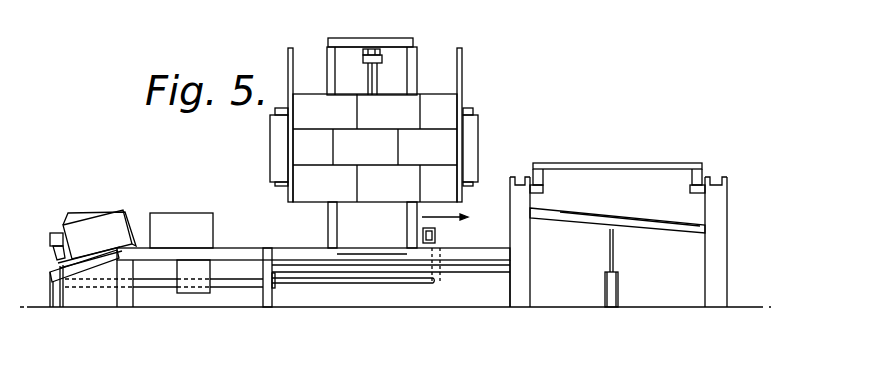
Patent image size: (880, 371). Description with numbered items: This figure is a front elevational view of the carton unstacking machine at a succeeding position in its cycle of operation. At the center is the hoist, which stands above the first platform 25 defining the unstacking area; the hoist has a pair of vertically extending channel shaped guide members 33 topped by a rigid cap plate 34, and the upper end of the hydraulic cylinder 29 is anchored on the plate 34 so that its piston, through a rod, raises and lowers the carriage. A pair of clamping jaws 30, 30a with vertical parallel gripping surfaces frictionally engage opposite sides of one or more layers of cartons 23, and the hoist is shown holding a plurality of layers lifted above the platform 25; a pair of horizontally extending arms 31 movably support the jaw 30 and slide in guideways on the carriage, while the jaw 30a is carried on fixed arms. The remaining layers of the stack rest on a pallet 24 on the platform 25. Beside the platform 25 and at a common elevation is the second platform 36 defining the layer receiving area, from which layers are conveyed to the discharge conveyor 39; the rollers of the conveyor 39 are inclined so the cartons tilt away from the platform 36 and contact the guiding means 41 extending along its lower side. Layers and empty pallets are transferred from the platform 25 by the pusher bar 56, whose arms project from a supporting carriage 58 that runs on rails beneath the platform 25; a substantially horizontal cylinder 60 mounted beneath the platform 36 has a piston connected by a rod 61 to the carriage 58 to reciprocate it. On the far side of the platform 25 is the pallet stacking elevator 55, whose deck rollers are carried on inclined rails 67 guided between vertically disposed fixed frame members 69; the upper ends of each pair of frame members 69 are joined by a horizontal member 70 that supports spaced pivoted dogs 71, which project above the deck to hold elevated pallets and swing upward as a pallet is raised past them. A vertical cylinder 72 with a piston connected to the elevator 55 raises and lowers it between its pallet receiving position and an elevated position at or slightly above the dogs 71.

The cartons 23 is at (353, 157).
The pallet 24 is at (642, 163).
The first platform 25 is at (370, 247).
The hydraulic cylinder 29 is at (368, 82).
The clamping jaw 30 is at (462, 68).
The clamping jaw 30a is at (288, 77).
The horizontally extending arms 31 is at (478, 108).
The channel shaped guide members 33 is at (417, 76).
The cap plate 34 is at (410, 40).
The second platform 36 is at (235, 244).
The discharge conveyor 39 is at (98, 255).
The guiding means 41 is at (55, 249).
The pallet stacking elevator 55 is at (629, 208).
The pusher bar 56 is at (436, 236).
The supporting carriage 58 is at (445, 272).
The cylinder 60 is at (248, 285).
The rod 61 is at (350, 285).
The inclined rails 67 is at (586, 223).
The fixed frame members 69 is at (724, 268).
The horizontal members 70 is at (718, 177).
The pivoted dogs 71 is at (545, 189).
The vertical cylinder 72 is at (619, 283).